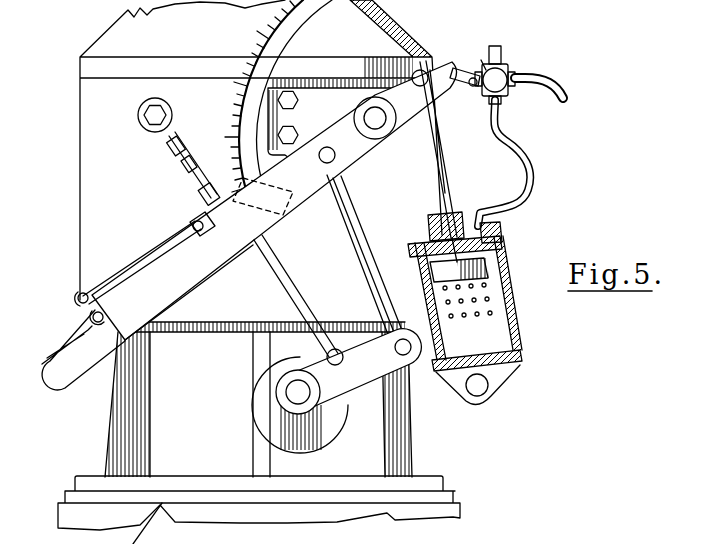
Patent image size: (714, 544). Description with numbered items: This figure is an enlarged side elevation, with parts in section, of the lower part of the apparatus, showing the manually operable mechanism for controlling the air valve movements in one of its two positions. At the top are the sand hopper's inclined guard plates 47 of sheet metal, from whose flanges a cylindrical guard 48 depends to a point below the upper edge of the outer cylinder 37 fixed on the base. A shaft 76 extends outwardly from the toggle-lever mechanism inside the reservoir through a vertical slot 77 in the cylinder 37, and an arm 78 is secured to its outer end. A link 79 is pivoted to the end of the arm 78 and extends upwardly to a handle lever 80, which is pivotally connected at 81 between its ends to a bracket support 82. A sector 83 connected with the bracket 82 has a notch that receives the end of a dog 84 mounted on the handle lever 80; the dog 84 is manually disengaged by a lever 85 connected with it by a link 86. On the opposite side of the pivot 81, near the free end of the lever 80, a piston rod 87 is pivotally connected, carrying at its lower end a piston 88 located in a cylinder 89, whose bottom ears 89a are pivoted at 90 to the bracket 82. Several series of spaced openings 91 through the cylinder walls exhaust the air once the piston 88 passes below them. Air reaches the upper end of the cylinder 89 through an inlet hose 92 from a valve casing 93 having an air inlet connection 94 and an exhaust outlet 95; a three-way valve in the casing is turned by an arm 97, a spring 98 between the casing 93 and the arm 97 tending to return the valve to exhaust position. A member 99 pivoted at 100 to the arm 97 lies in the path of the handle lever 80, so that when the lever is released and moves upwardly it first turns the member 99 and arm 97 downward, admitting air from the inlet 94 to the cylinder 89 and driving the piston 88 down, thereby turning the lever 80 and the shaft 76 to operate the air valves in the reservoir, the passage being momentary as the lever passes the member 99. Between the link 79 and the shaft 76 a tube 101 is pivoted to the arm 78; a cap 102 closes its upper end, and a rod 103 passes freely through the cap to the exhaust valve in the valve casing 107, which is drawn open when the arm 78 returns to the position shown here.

The cylinder 37 is at (160, 390).
The inclined guard plates 47 is at (113, 38).
The cylindrical guard 48 is at (92, 205).
The shaft 76 is at (295, 393).
The vertical slot 77 is at (283, 435).
The arm 78 is at (377, 373).
The link 79 is at (363, 250).
The handle lever 80 is at (303, 203).
The pivot 81 is at (377, 128).
The bracket support 82 is at (338, 213).
The sector 83 is at (290, 37).
The dog 84 is at (208, 230).
The lever 85 is at (70, 335).
The link 86 is at (118, 270).
The piston rod 87 is at (440, 157).
The piston 88 is at (490, 262).
The cylinder 89 is at (497, 323).
The ears 89a is at (495, 370).
The pivotal connection 90 is at (478, 392).
The openings 91 is at (486, 299).
The inlet hose 92 is at (525, 193).
The valve casing 93 is at (505, 73).
The air inlet connection 94 is at (547, 80).
The exhaust outlet 95 is at (498, 48).
The arm 97 is at (482, 58).
The spring 98 is at (510, 97).
The member 99 is at (460, 72).
The pivotal connection 100 is at (473, 84).
The tube 101 is at (260, 258).
The cap 102 is at (199, 188).
The rod 103 is at (192, 172).
The valve casing 107 is at (172, 108).